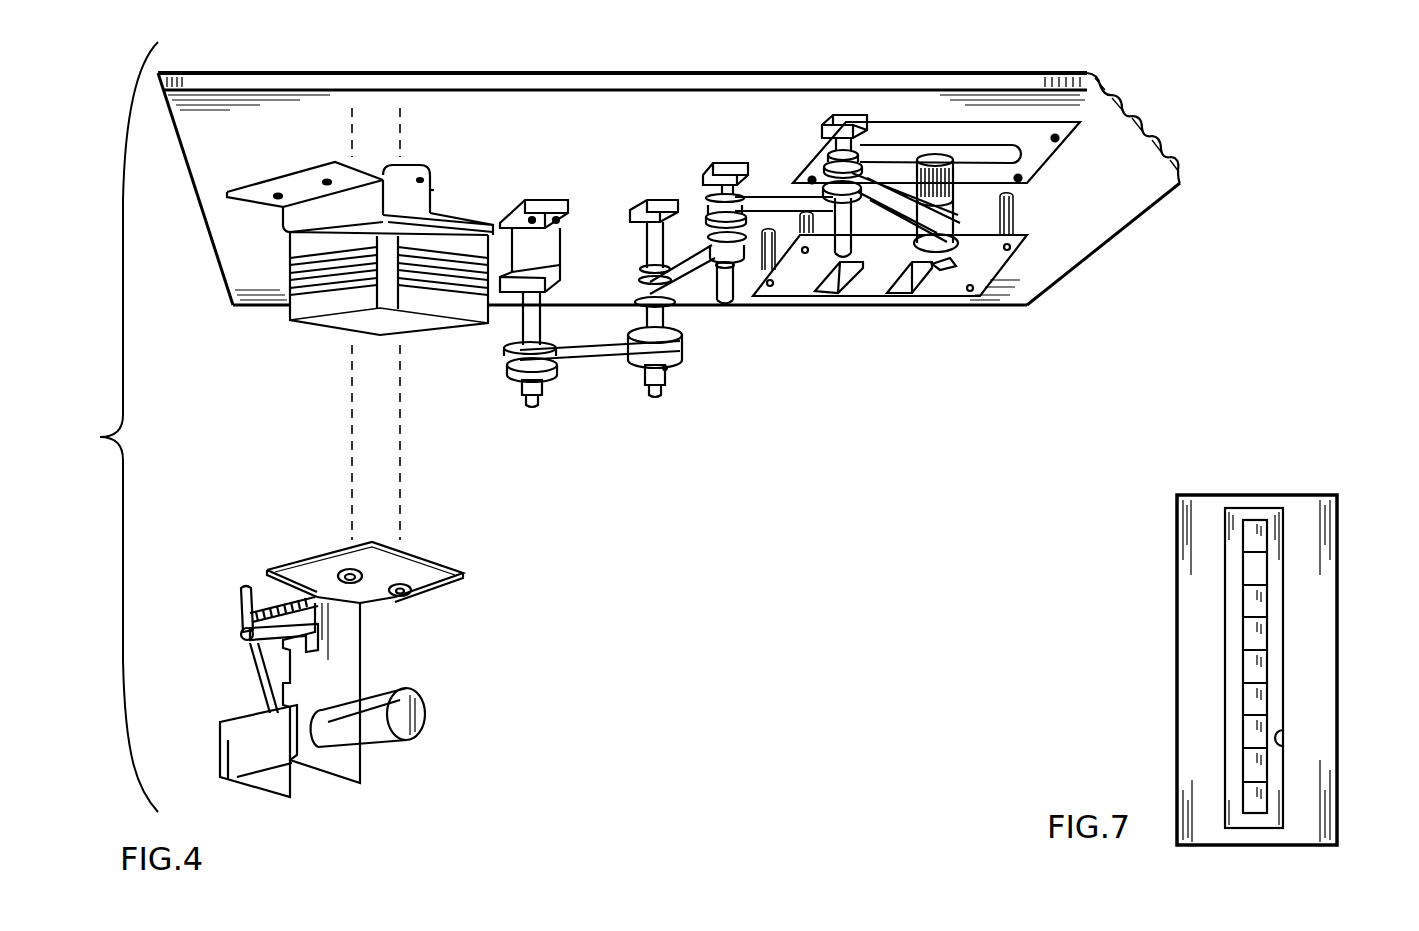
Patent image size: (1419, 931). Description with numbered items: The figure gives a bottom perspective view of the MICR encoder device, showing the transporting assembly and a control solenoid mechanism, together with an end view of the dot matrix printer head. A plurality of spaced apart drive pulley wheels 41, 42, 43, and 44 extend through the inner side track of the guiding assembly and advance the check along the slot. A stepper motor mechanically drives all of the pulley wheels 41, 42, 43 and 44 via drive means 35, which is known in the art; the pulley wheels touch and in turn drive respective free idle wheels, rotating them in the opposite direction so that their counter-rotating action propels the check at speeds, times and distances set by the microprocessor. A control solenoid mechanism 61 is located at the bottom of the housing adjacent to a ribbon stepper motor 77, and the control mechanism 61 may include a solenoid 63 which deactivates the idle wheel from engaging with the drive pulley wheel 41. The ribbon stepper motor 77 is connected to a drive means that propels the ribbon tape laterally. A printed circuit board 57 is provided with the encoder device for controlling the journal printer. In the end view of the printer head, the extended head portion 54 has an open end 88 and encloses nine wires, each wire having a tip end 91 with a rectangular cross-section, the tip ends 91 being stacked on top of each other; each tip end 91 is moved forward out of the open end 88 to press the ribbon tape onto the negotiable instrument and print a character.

In FIG. 4, the drive means 35 is at (1025, 183).
In FIG. 4, the drive pulley wheel 41 is at (530, 330).
In FIG. 4, the drive pulley wheel 42 is at (665, 315).
In FIG. 4, the drive pulley wheel 43 is at (735, 293).
In FIG. 4, the drive pulley wheel 44 is at (843, 138).
In FIG. 4, the printed circuit board 57 is at (1010, 268).
In FIG. 4, the ribbon stepper motor 77 is at (380, 322).
In FIG. 4, the control solenoid mechanism 61 is at (488, 602).
In FIG. 4, the solenoid 63 is at (380, 738).
In FIG. 7, the extended head portion 54 is at (1337, 613).
In FIG. 7, the open end 88 is at (1283, 752).
In FIG. 7, the tip end 91 is at (1257, 800).